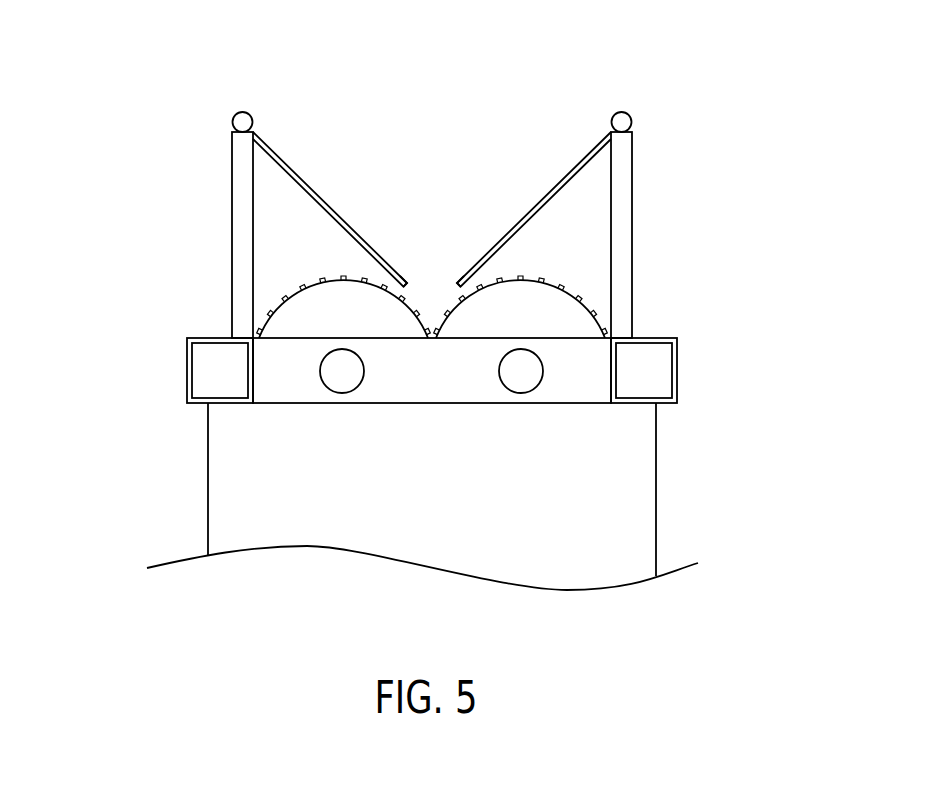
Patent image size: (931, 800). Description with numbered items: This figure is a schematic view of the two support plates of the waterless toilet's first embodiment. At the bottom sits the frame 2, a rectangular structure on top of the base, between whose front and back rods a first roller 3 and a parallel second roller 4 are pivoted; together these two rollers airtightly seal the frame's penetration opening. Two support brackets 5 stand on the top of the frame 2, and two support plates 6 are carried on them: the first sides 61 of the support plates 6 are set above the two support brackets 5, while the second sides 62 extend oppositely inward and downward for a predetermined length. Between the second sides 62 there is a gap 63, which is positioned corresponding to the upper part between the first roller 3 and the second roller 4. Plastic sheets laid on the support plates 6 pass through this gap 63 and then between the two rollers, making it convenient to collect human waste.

The frame 2 is at (187, 370).
The first roller 3 is at (298, 320).
The second roller 4 is at (563, 322).
The support brackets 5 is at (232, 233).
The support plates 6 is at (331, 198).
The first sides 61 is at (257, 126).
The second sides 62 is at (407, 280).
The gap 63 is at (435, 283).